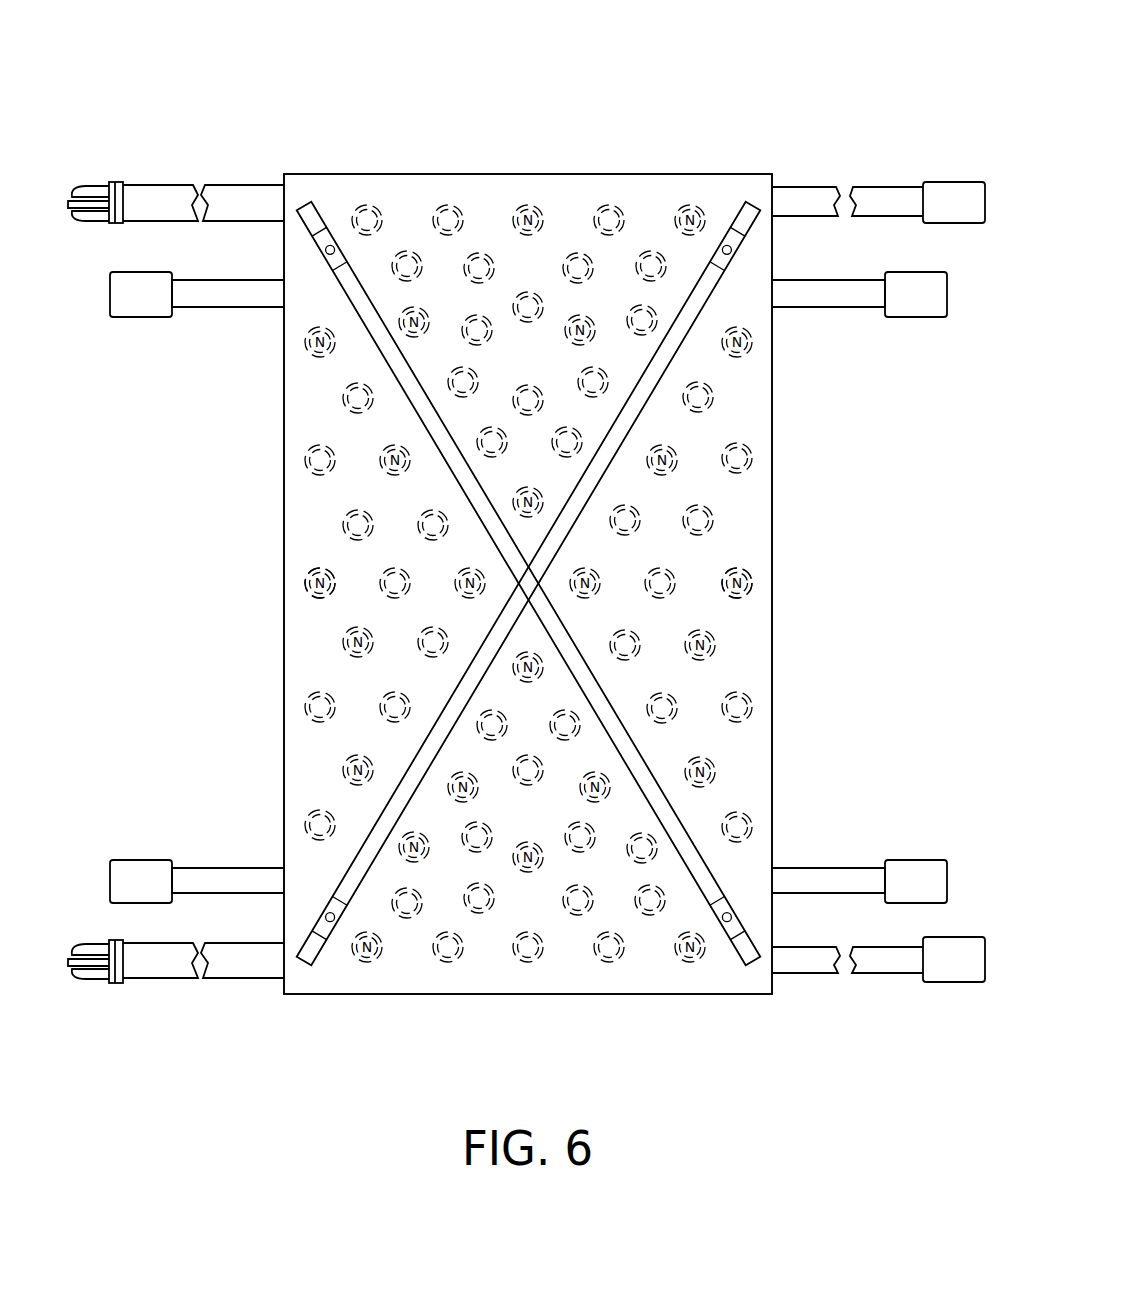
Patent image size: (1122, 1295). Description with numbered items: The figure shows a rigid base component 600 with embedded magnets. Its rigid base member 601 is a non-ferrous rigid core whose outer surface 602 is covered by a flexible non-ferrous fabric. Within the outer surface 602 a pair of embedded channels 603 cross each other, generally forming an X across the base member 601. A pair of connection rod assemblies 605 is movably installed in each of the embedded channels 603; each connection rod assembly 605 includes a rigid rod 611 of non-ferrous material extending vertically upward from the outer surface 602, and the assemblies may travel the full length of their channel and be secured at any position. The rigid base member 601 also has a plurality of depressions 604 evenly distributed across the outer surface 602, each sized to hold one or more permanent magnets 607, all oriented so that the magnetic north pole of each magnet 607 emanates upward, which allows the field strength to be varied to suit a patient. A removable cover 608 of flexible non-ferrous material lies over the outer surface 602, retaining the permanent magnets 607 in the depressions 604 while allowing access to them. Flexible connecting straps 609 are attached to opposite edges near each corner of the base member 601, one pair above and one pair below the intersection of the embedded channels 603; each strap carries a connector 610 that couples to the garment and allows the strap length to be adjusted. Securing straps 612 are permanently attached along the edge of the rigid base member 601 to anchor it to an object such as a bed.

The rigid base component 600 is at (792, 104).
The rigid base member 601 is at (773, 473).
The outer surface 602 is at (447, 190).
The embedded channels 603 is at (407, 777).
The depressions 604 is at (317, 573).
The connection rod assemblies 605 is at (298, 207).
The permanent magnets 607 is at (310, 590).
The removable cover 608 is at (517, 190).
The flexible connecting straps 609 is at (240, 292).
The connector 610 is at (137, 296).
The rigid rod 611 is at (324, 243).
The securing straps 612 is at (155, 200).